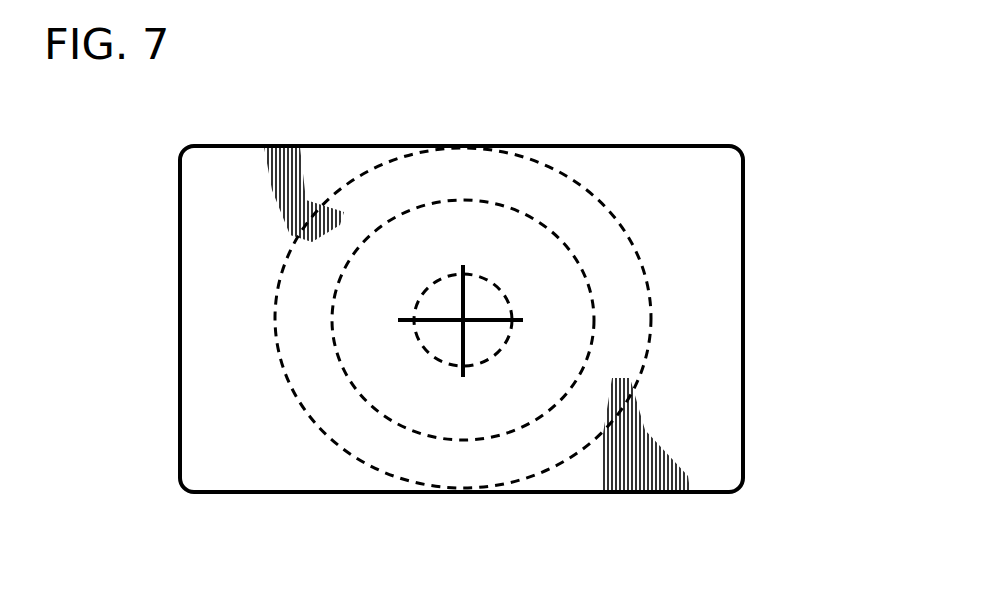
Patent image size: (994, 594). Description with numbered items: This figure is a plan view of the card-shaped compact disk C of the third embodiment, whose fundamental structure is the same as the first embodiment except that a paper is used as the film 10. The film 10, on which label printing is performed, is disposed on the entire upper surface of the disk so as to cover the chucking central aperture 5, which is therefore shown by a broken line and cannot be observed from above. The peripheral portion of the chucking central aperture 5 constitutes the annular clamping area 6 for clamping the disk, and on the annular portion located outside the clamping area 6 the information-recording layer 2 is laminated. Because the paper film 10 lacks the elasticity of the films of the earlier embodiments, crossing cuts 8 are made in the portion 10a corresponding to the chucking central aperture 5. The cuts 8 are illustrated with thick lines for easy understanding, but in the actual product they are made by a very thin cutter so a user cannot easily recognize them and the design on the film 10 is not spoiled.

The information-recording layer 2 is at (447, 170).
The chucking central aperture 5 is at (500, 283).
The annular clamping area 6 is at (357, 366).
The crossing cuts 8 is at (470, 331).
The film 10 is at (705, 190).
The portion corresponding to the chucking central aperture 10a is at (500, 338).
The compact disk C is at (627, 122).